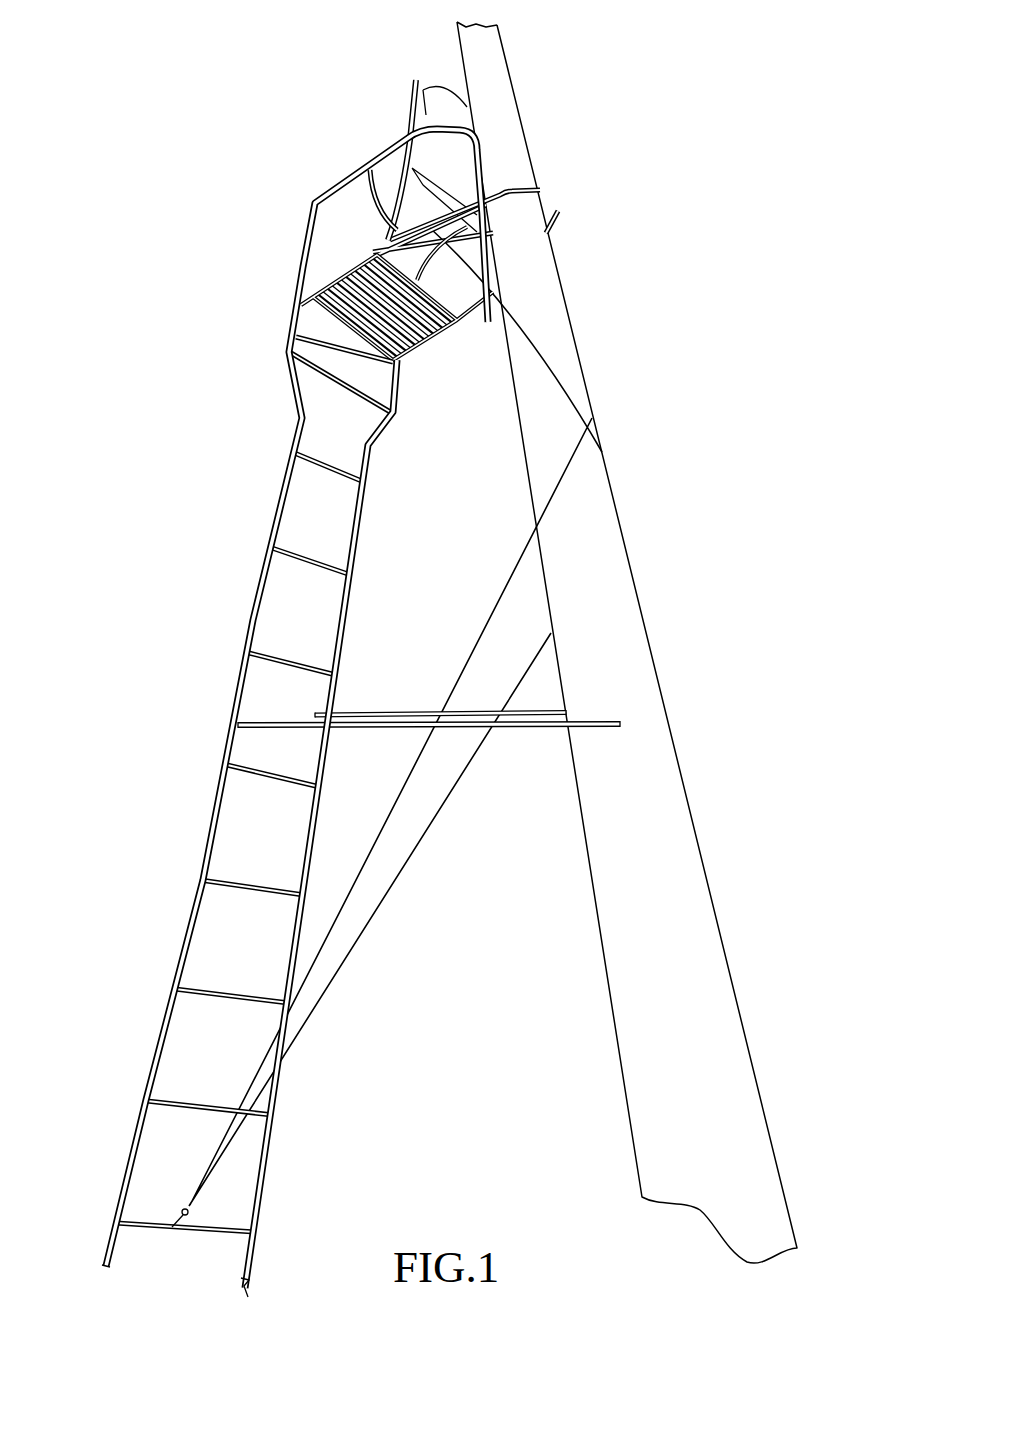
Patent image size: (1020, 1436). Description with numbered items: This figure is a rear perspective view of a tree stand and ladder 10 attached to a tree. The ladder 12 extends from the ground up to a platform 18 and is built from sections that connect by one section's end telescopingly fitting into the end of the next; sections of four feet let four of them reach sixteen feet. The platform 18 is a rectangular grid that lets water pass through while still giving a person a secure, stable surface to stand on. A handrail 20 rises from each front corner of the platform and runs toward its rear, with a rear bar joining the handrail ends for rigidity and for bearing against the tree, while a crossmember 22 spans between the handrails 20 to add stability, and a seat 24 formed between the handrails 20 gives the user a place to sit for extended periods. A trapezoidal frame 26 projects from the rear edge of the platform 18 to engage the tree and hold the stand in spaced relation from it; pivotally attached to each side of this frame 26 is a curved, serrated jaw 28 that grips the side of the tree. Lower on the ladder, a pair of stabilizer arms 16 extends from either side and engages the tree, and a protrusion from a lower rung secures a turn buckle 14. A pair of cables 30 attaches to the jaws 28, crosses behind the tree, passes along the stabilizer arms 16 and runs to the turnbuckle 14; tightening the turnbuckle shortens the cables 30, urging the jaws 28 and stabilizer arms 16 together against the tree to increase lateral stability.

The tree stand and ladder 10 is at (265, 197).
The ladder 12 is at (172, 962).
The turn buckle 14 is at (190, 1207).
The stabilizer arms 16 is at (373, 720).
The platform 18 is at (337, 322).
The handrail 20 is at (326, 188).
The crossmember 22 is at (388, 200).
The seat 24 is at (438, 165).
The platform / seat frame 26 is at (476, 338).
The curved jaw 28 is at (518, 188).
The cables 30 is at (397, 807).